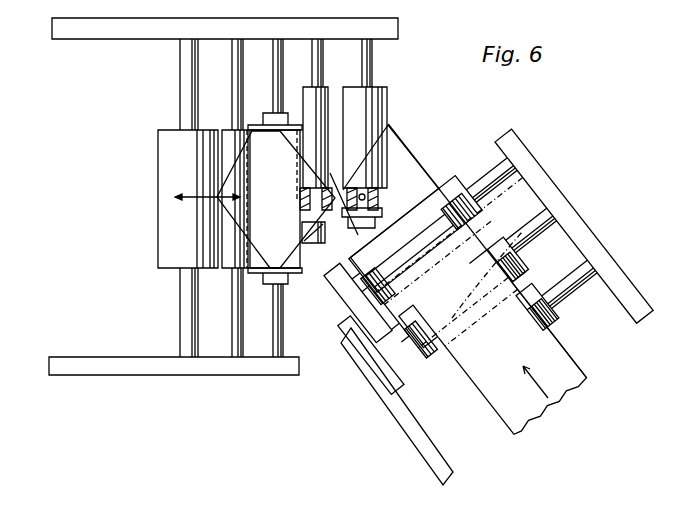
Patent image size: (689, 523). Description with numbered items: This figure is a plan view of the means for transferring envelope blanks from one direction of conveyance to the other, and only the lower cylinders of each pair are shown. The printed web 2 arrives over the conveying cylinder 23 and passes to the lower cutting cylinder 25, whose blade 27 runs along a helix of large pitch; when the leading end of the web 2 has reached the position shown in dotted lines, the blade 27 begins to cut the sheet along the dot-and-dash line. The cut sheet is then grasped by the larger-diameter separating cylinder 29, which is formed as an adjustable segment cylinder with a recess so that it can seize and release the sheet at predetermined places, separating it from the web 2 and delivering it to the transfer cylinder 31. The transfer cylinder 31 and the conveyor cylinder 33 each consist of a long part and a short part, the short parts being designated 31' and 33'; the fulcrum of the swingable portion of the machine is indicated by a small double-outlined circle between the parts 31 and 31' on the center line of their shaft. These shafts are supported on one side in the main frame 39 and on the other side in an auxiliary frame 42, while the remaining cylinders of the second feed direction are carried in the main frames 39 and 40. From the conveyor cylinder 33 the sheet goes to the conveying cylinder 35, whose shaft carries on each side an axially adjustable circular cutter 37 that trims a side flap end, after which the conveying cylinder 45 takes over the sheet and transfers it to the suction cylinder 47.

The web 2 is at (581, 362).
The conveying cylinder 23 is at (542, 293).
The lower cutting cylinder 25 is at (497, 248).
The blade 27 is at (508, 245).
The lower separating cylinder 29 is at (462, 188).
The transfer cylinder 31 is at (375, 127).
The short part of transfer cylinder 31' is at (375, 208).
The conveyor cylinder 33 is at (324, 127).
The short part of conveyor cylinder 33' is at (323, 227).
The conveying cylinder with circular cutters 35 is at (297, 125).
The circular cutter 37 is at (263, 122).
The main frame 39 is at (84, 32).
The main frame 40 is at (80, 362).
The auxiliary frame 42 is at (325, 213).
The conveying cylinder 45 is at (228, 133).
The suction cylinder 47 is at (168, 133).